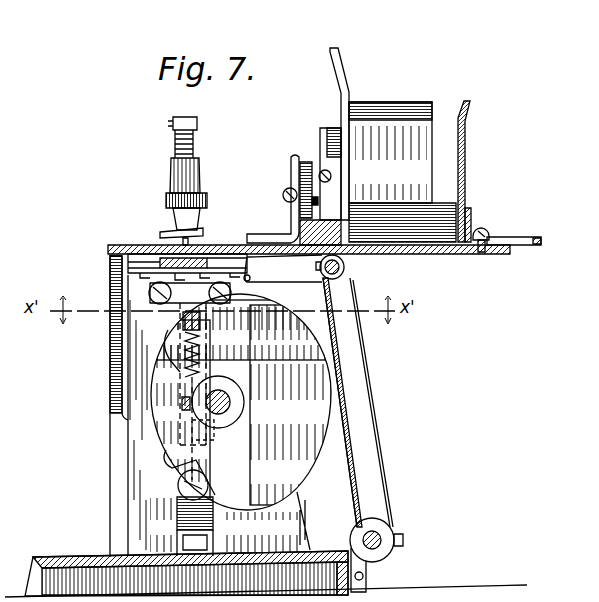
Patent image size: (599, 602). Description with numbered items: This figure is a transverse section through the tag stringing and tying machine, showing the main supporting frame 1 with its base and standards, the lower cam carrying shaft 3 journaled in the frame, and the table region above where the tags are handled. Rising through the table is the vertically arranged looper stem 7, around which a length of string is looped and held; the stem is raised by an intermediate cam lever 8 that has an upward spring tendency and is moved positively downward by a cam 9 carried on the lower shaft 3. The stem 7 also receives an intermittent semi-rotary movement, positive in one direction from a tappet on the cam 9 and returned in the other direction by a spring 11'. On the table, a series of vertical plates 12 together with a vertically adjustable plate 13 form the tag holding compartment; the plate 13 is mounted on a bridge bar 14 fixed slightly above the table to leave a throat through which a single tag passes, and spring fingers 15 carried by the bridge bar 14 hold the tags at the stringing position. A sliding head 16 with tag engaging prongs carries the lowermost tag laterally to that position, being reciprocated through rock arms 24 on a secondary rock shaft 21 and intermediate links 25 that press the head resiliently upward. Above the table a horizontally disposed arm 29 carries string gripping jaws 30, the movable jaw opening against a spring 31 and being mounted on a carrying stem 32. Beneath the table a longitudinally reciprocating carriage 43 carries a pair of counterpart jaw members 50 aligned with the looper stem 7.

The main supporting frame 1 is at (63, 557).
The lower cam carrying shaft 3 is at (230, 402).
The looper stem 7 is at (160, 312).
The intermediate cam lever 8 is at (176, 503).
The cam 9 is at (303, 467).
The spring 11' is at (134, 406).
The vertical plates 12 is at (472, 169).
The vertically adjustable hopper plate 13 is at (349, 72).
The bridge bar 14 is at (312, 186).
The spring fingers 15 is at (253, 244).
The sliding head 16 is at (262, 258).
The secondary rock shaft 21 is at (381, 549).
The rock arms 24 is at (366, 405).
The intermediate links 25 is at (297, 280).
The horizontally disposed arm 29 is at (166, 197).
The string gripping and carrying jaws 30 is at (160, 234).
The spring 31 is at (175, 144).
The carrying stem 32 is at (198, 127).
The longitudinally reciprocating carriage 43 is at (128, 270).
The counterpart jaw members 50 is at (128, 260).